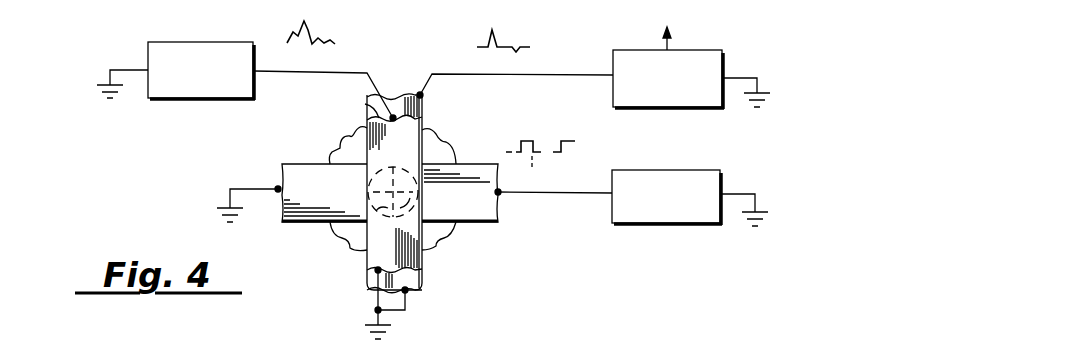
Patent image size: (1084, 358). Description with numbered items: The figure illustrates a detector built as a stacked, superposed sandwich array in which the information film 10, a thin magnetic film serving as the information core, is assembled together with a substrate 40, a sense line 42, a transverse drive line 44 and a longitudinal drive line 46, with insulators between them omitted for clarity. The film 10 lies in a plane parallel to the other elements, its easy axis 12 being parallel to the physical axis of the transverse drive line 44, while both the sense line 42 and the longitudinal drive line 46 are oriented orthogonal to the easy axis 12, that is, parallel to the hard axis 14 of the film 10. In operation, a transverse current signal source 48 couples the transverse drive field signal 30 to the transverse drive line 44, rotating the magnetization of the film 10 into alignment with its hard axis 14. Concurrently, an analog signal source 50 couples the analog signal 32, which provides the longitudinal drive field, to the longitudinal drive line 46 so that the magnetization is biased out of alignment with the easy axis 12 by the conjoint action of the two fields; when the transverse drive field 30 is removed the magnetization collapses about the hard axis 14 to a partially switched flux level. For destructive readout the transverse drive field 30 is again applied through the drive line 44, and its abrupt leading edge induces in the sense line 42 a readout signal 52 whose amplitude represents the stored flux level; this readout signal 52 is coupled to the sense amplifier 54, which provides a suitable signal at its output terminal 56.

The information film 10 is at (368, 168).
The easy axis 12 is at (423, 206).
The hard axis 14 is at (366, 216).
The transverse drive field signal 30 is at (522, 142).
The analog signal 32 is at (309, 28).
The substrate 40 is at (445, 250).
The sense line 42 is at (425, 104).
The transverse drive line 44 is at (497, 226).
The longitudinal drive line 46 is at (365, 103).
The transverse current signal source 48 is at (690, 170).
The analog signal source 50 is at (203, 42).
The readout signal 52 is at (500, 33).
The sense amplifier 54 is at (697, 50).
The output terminal 56 is at (664, 33).